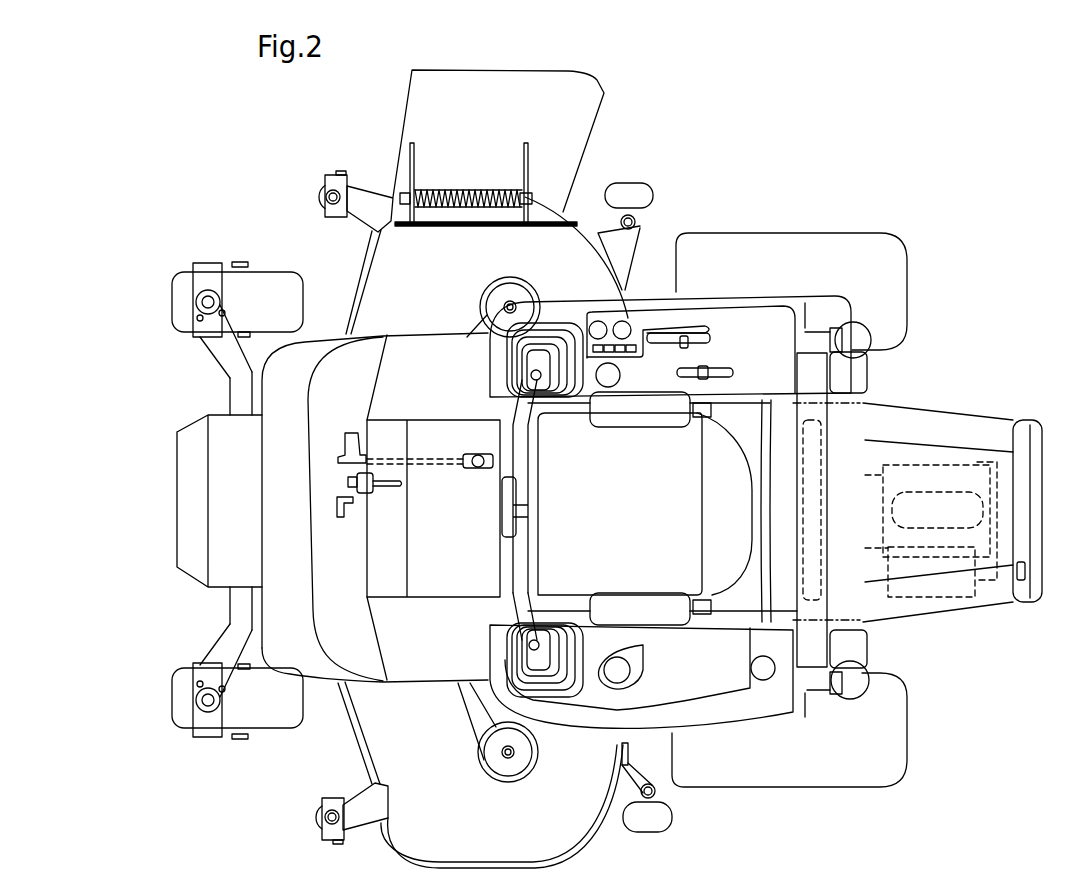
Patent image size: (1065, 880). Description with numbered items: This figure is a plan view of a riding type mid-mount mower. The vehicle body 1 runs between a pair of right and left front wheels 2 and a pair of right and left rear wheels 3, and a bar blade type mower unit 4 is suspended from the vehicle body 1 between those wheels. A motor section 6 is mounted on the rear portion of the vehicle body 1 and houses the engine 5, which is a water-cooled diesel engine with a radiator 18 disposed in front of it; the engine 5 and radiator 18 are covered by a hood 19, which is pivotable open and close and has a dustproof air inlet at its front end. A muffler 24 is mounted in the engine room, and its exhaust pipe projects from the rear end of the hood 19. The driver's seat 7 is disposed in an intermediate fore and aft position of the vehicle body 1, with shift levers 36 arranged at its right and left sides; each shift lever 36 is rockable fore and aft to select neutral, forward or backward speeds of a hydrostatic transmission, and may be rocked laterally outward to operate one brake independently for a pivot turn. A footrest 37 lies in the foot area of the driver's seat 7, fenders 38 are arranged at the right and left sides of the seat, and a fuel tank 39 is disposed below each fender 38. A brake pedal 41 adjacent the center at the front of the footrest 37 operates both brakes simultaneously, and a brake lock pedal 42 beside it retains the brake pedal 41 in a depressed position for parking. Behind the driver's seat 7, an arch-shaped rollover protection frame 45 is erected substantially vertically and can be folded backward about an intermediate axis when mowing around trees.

The vehicle body 1 is at (272, 604).
The front wheels 2 is at (172, 302).
The rear wheels 3 is at (907, 279).
The mower unit 4 is at (345, 738).
The engine 5 is at (935, 465).
The motor section 6 is at (985, 623).
The driver's seat 7 is at (642, 580).
The radiator 18 is at (797, 545).
The hood 19 is at (980, 420).
The muffler 24 is at (930, 600).
The shift levers 36 is at (527, 535).
The footrest 37 is at (413, 678).
The fenders 38 is at (579, 297).
The fuel tank 39 is at (835, 308).
The brake pedal 41 is at (373, 492).
The brake lock pedal 42 is at (343, 518).
The rollover protection frame 45 is at (800, 388).